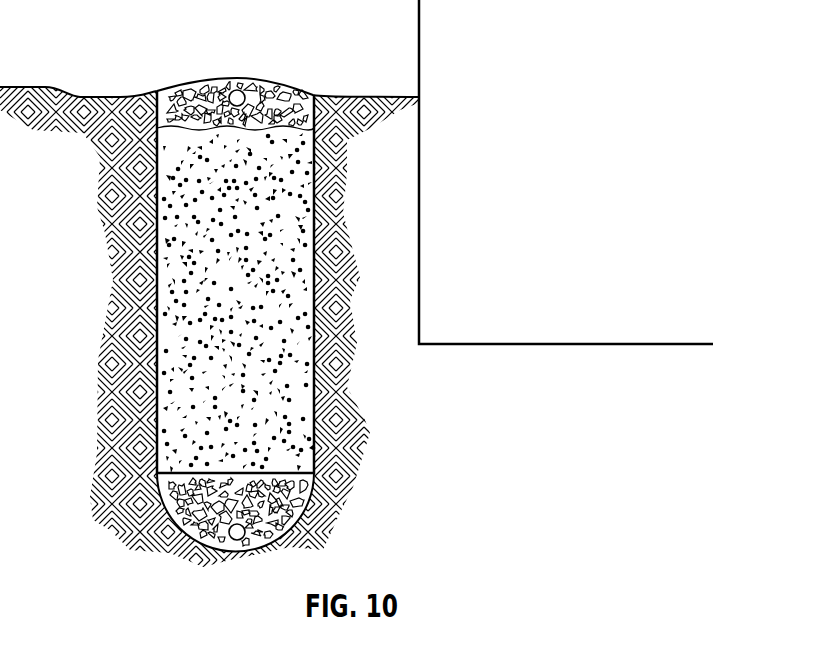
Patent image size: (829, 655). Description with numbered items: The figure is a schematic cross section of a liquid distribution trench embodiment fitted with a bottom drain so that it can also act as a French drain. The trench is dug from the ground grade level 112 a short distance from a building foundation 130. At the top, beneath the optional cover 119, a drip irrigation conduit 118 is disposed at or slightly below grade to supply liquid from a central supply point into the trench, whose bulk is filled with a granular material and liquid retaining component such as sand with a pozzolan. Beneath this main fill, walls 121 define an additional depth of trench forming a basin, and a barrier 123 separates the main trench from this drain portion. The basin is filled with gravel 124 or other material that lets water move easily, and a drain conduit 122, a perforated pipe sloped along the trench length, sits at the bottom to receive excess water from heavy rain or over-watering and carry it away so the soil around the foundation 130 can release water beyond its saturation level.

The ground grade level 112 is at (98, 97).
The drip irrigation conduit 118 is at (238, 90).
The cover 119 is at (200, 80).
The walls of additional depth of trench 121 is at (300, 500).
The drain conduit 122 is at (232, 549).
The barrier 123 is at (163, 478).
The gravel 124 is at (197, 530).
The building foundation 130 is at (676, 344).